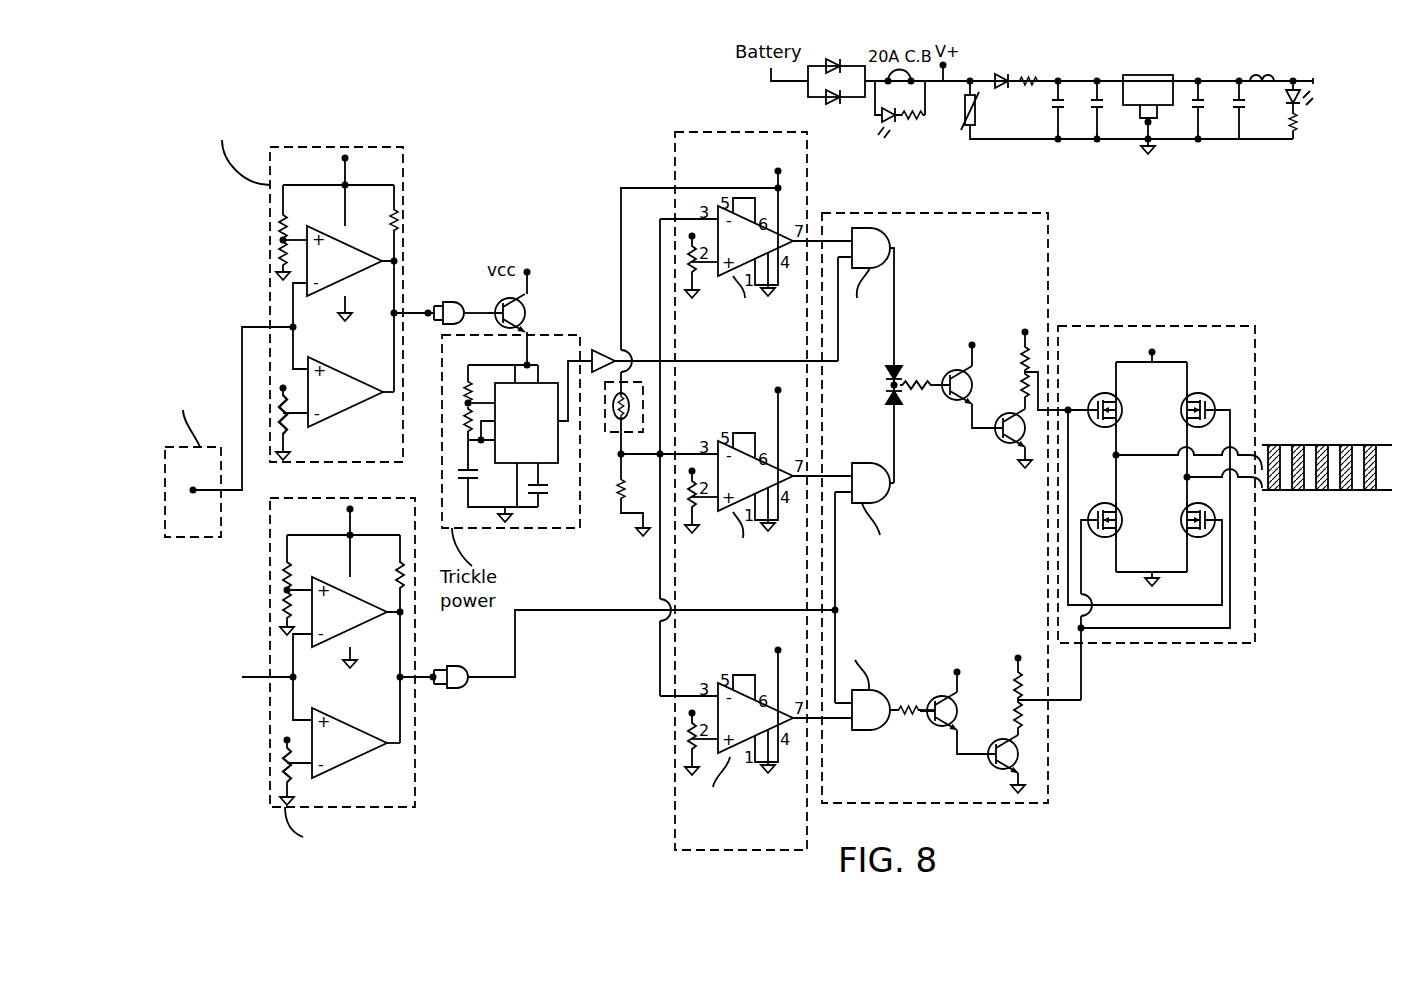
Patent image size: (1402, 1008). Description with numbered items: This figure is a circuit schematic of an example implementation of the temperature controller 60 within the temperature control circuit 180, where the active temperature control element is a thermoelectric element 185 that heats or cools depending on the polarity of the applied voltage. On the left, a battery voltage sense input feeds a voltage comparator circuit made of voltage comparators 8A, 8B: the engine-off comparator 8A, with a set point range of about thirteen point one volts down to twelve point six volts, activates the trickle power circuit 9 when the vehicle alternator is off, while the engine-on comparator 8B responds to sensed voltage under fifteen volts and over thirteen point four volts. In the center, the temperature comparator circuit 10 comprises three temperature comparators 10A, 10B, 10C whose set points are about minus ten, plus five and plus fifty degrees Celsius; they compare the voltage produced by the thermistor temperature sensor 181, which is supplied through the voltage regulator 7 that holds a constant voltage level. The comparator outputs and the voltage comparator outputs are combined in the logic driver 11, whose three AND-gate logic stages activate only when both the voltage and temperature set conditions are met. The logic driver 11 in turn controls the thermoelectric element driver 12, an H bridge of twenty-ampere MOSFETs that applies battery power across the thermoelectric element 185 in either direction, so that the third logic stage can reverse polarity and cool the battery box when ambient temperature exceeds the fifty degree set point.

The temperature controller 60 is at (550, 87).
The voltage regulator supply 7 is at (1202, 144).
The voltage comparator 8A is at (403, 185).
The voltage comparator 8B is at (415, 740).
The trickle power circuit 9 is at (552, 335).
The temperature comparator circuit 10 is at (675, 807).
The temperature comparator 10A is at (728, 180).
The temperature comparator 10B is at (724, 424).
The temperature comparator 10C is at (724, 668).
The logic driver 11 is at (1048, 797).
The thermoelectric element driver 12 is at (1255, 640).
The temperature control circuit 180 is at (1235, 741).
The temperature sensor 181 is at (615, 433).
The thermoelectric element 185 is at (1325, 483).